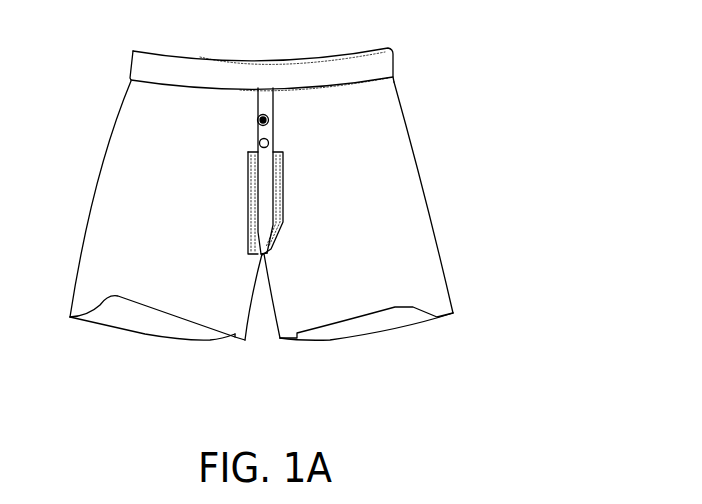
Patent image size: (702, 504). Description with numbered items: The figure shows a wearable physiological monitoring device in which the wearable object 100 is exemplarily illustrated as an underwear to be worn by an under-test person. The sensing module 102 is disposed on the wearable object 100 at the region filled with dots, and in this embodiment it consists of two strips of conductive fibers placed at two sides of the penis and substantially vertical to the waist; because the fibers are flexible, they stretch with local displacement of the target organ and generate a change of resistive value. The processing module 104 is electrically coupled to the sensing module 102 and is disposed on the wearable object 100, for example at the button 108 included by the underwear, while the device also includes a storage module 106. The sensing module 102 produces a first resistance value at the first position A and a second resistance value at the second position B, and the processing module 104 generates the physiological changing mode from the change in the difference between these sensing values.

The wearable object 100 is at (108, 120).
The sensing module 102 is at (288, 220).
The processing module 104 is at (275, 122).
The storage module 106 is at (264, 143).
The button 108 is at (257, 119).
The first position A is at (238, 158).
The second position B is at (238, 254).